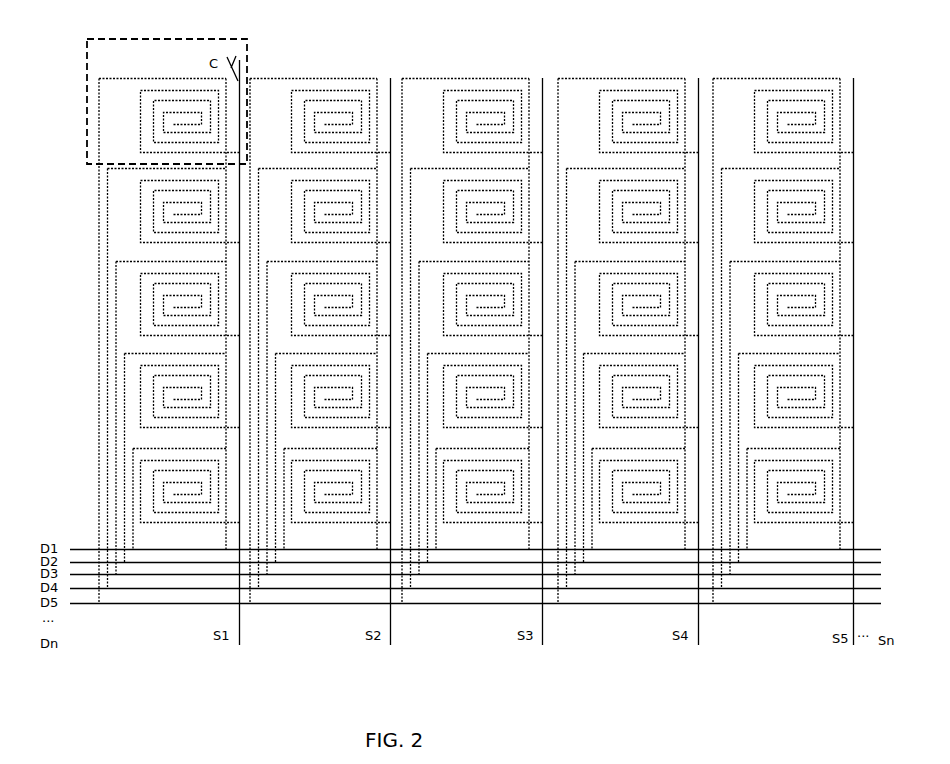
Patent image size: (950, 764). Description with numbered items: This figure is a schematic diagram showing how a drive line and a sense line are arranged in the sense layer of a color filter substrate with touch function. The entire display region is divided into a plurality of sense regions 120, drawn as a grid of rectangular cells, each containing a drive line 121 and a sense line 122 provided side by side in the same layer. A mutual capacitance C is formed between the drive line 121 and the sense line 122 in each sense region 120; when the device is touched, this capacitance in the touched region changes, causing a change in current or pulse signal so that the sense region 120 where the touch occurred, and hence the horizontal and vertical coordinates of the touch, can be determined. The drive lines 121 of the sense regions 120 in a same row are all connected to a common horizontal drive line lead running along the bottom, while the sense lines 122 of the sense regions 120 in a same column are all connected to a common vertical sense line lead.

The sense region 120 is at (167, 90).
The drive line 121 is at (99, 144).
The sense line 122 is at (240, 88).